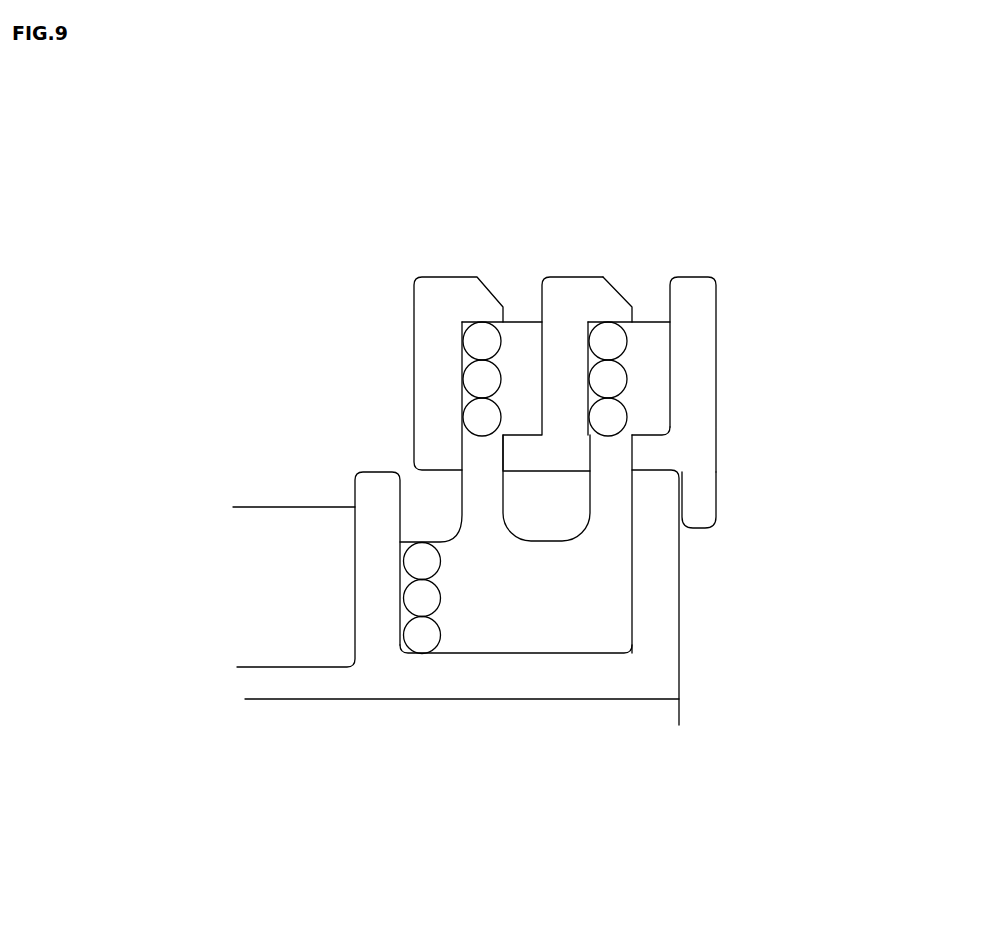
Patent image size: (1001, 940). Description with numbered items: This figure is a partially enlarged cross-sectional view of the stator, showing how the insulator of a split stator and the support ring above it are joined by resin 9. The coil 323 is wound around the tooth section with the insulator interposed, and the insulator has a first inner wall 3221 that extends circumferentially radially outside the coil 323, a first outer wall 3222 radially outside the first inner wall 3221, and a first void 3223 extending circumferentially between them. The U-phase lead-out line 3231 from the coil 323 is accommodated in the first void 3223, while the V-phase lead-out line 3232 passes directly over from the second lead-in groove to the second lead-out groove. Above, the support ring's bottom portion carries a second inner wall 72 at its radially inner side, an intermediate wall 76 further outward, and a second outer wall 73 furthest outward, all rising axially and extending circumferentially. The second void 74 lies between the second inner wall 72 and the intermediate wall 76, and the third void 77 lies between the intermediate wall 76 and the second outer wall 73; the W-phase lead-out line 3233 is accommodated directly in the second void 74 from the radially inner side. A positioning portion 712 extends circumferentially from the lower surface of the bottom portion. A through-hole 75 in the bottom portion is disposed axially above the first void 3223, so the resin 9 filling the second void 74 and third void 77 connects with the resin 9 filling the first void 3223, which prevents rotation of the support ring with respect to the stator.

The resin 9 is at (605, 360).
The second inner wall 72 is at (428, 330).
The second outer wall 73 is at (747, 334).
The second void 74 is at (558, 315).
The through-hole 75 is at (539, 485).
The intermediate wall 76 is at (621, 234).
The third void 77 is at (684, 305).
The positioning portion 712 is at (766, 500).
The coil 323 is at (222, 532).
The first inner wall 3221 is at (318, 642).
The first outer wall 3222 is at (546, 597).
The first void 3223 is at (516, 709).
The U-phase lead-out line 3231 is at (303, 529).
The V-phase lead-out line 3232 is at (736, 378).
The W-phase lead-out line 3233 is at (368, 331).